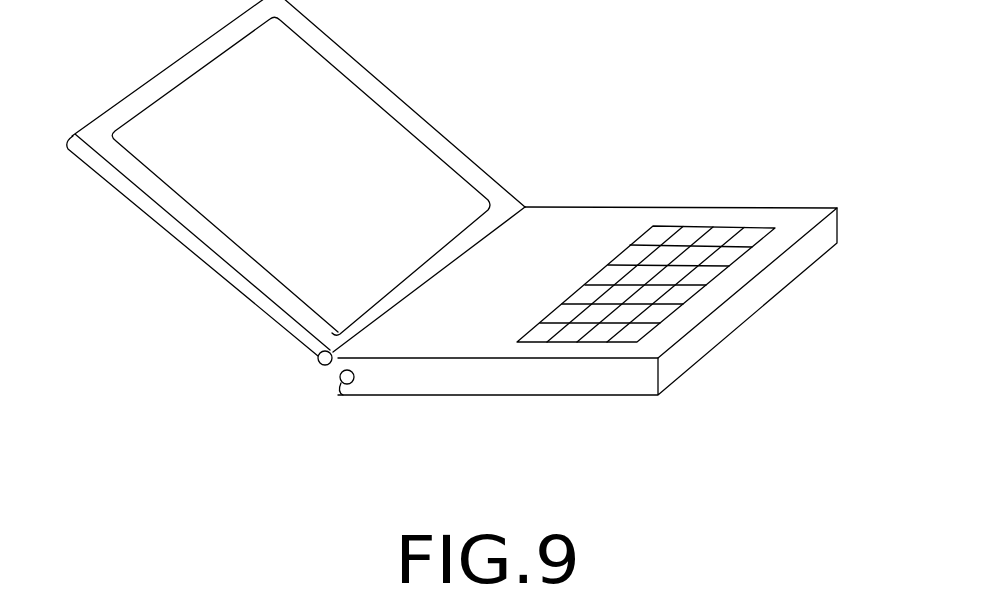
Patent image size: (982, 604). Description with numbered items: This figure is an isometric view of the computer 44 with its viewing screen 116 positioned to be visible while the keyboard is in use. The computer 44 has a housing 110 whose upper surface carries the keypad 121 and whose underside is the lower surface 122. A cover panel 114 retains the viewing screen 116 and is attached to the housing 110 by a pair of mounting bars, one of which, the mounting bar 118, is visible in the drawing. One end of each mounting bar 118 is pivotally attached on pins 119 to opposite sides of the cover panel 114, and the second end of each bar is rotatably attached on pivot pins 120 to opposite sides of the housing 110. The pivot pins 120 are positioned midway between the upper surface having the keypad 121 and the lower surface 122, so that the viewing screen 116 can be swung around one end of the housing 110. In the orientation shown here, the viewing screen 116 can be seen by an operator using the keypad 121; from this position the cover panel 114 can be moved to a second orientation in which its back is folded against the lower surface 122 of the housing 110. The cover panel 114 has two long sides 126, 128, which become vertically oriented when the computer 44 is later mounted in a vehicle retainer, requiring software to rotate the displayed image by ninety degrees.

The computer 44 is at (460, 244).
The housing 110 is at (592, 208).
The cover panel 114 is at (205, 267).
The viewing screen 116 is at (387, 110).
The mounting bar 118 is at (340, 374).
The pins 119 is at (318, 358).
The pivot pins 120 is at (343, 394).
The keypad 121 is at (720, 233).
The lower surface 122 is at (753, 315).
The long side 126 is at (160, 73).
The long side 128 is at (414, 294).